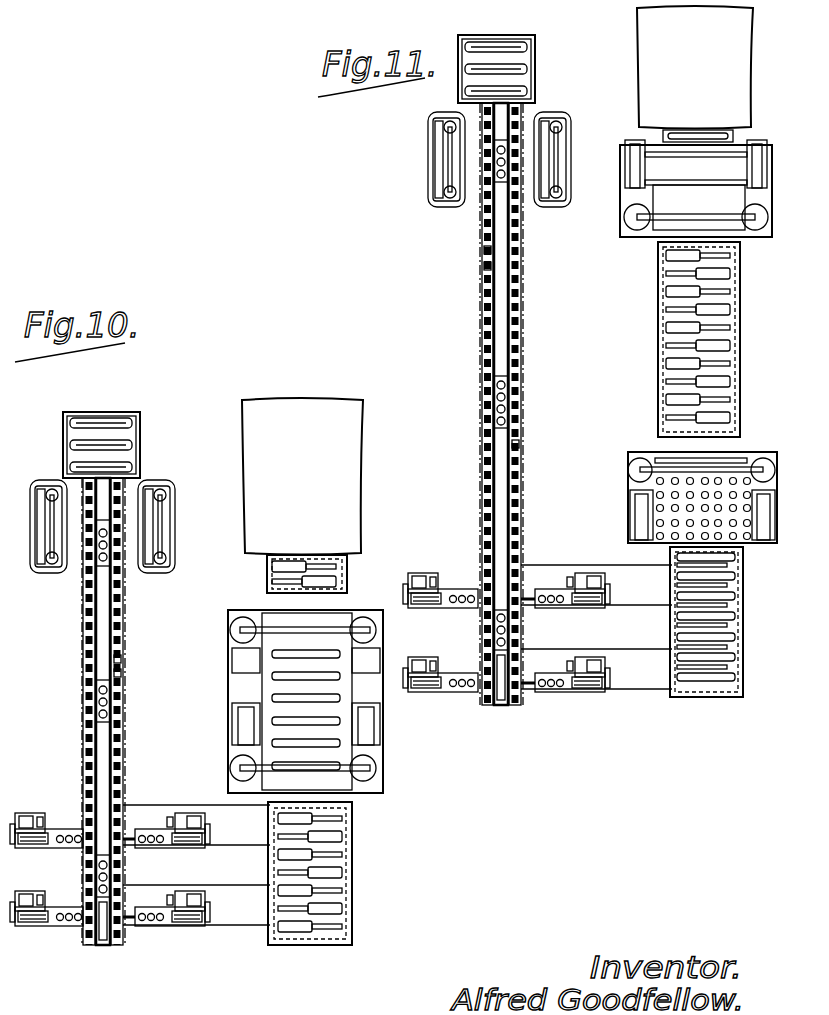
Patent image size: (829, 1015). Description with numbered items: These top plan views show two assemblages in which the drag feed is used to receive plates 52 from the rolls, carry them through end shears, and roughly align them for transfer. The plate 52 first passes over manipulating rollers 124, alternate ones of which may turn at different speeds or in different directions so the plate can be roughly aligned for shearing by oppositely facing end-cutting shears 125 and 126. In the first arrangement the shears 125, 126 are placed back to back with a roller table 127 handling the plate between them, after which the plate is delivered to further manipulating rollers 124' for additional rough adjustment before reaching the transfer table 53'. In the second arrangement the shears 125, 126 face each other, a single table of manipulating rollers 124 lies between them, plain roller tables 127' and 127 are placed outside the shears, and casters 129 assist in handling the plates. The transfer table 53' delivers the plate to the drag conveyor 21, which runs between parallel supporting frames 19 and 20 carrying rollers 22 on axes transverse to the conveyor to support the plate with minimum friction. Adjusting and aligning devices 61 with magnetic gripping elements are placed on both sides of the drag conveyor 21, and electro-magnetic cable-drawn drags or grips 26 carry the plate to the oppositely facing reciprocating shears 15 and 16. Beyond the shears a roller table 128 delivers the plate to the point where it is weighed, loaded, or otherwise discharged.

In FIG. 10, the reciprocating tool 15 is at (42, 524).
In FIG. 11, the reciprocating tool 15 is at (440, 157).
In FIG. 10, the reciprocating tool 16 is at (162, 527).
In FIG. 11, the reciprocating tool 16 is at (547, 158).
In FIG. 10, the supporting frame 19 is at (92, 640).
In FIG. 11, the supporting frame 19 is at (487, 302).
In FIG. 10, the supporting frame 20 is at (124, 640).
In FIG. 11, the supporting frame 20 is at (518, 297).
In FIG. 10, the drag conveyor 21 is at (103, 750).
In FIG. 11, the drag conveyor 21 is at (505, 482).
In FIG. 10, the rollers 22 is at (121, 658).
In FIG. 11, the rollers 22 is at (485, 247).
In FIG. 10, the electro-magnetic cable-drawn drags or grips 26 is at (98, 562).
In FIG. 11, the electro-magnetic cable-drawn drags or grips 26 is at (497, 188).
In FIG. 10, the plate 52 is at (302, 476).
In FIG. 11, the plate 52 is at (695, 67).
In FIG. 10, the transfer table 53' is at (196, 864).
In FIG. 11, the transfer table 53' is at (596, 627).
In FIG. 10, the adjusting and aligning mechanism 61 is at (110, 869).
In FIG. 11, the adjusting and aligning mechanism 61 is at (506, 632).
In FIG. 10, the manipulating rollers 124 is at (327, 574).
In FIG. 11, the manipulating rollers 124 is at (719, 339).
In FIG. 10, the manipulating rollers 124' is at (333, 873).
In FIG. 10, the end-cutting shear 125 is at (382, 633).
In FIG. 11, the end-cutting shear 125 is at (758, 457).
In FIG. 10, the end-cutting shear 126 is at (382, 775).
In FIG. 11, the end-cutting shear 126 is at (757, 230).
In FIG. 10, the roller table 127 is at (332, 732).
In FIG. 11, the roller table 127 is at (728, 622).
In FIG. 11, the plain roller table 127' is at (705, 117).
In FIG. 10, the roller table 128 is at (122, 450).
In FIG. 11, the roller table 128 is at (515, 70).
In FIG. 11, the casters 129 is at (733, 524).